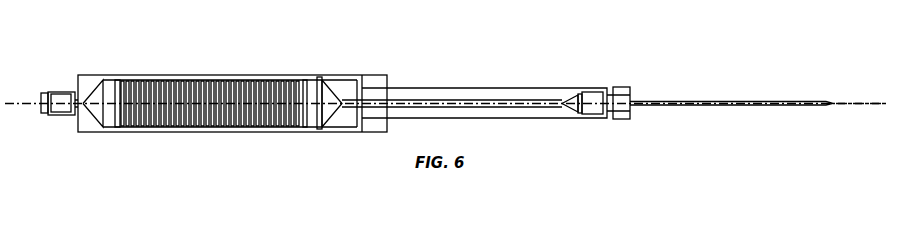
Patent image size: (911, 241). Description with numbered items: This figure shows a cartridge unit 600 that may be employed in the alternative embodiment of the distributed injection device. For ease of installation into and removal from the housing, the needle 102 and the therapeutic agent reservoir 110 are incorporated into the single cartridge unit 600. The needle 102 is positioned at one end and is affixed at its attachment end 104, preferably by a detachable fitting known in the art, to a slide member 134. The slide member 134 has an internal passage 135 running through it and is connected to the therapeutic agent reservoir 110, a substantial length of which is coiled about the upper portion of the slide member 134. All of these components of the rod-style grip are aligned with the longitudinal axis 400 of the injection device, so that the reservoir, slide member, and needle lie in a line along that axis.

The cartridge unit 600 is at (805, 29).
The therapeutic agent reservoir 110 is at (147, 85).
The slide member 134 is at (413, 90).
The internal passage 135 is at (483, 99).
The attachment end 104 is at (577, 93).
The needle 102 is at (720, 101).
The longitudinal axis 400 is at (855, 103).